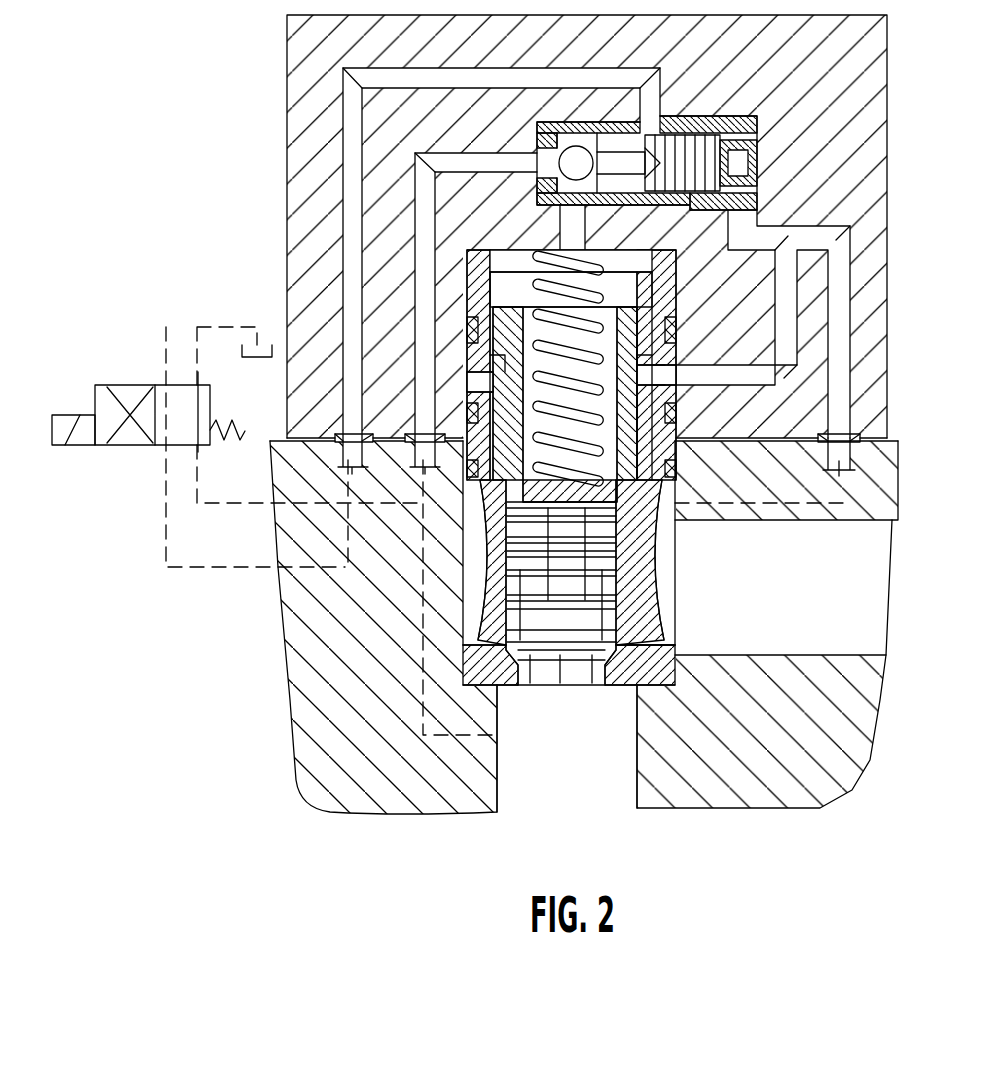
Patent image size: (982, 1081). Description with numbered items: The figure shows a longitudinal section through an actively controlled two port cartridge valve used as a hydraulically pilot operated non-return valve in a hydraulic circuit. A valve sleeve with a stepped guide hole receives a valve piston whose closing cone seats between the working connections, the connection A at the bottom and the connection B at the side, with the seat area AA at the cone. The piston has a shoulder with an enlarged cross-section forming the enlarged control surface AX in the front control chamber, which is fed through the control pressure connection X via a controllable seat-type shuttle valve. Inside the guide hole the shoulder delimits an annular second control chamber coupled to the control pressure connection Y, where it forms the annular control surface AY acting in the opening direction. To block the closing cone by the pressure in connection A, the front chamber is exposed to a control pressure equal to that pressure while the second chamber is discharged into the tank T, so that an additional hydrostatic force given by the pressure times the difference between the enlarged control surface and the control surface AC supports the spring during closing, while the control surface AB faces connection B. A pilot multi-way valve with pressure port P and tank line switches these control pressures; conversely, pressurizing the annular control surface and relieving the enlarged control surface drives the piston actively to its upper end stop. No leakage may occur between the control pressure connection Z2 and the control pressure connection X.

The pressure port P is at (200, 447).
The tank port T is at (347, 531).
The control port X is at (491, 285).
The control port Z2 is at (465, 328).
The control port Y is at (771, 360).
The effective area AX is at (648, 335).
The effective area AY is at (644, 372).
The effective area AC is at (605, 515).
The effective area AB is at (640, 662).
The seat area AA is at (516, 688).
The port A is at (567, 748).
The port B is at (783, 579).